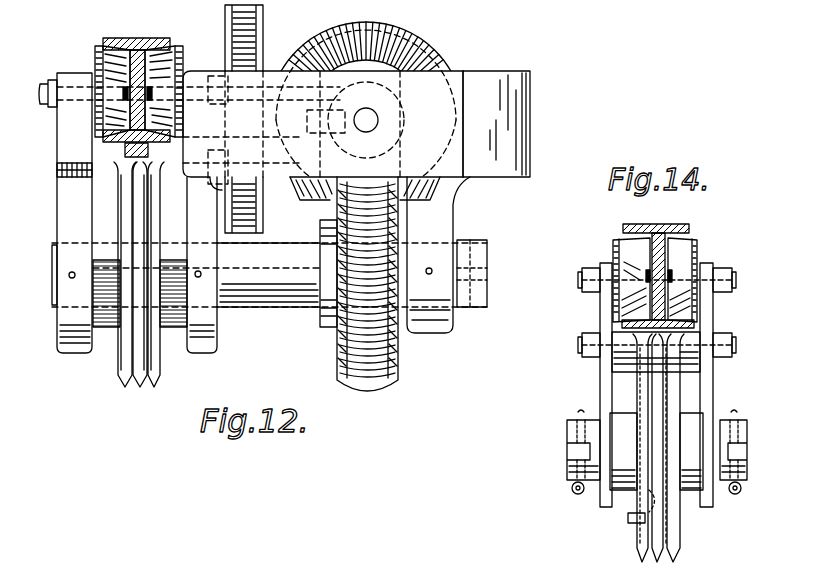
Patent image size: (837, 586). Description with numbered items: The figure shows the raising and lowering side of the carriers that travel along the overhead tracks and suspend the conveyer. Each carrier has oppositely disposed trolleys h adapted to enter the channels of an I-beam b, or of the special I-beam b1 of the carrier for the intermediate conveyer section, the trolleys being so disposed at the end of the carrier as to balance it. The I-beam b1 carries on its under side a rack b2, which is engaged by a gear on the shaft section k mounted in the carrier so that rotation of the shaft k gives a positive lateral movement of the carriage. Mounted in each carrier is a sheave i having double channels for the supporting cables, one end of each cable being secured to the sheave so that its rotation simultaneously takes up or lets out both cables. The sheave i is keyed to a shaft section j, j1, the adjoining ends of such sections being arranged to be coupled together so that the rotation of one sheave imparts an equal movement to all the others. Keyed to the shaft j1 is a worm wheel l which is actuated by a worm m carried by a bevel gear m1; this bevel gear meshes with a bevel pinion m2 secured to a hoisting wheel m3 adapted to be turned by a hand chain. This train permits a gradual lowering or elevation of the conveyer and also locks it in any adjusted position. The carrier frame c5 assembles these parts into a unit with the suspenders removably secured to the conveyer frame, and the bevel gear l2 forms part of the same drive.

In FIG. 12, the trolley h is at (92, 56).
In FIG. 14, the trolley h is at (630, 258).
In FIG. 12, the I-beam b1 is at (135, 46).
In FIG. 12, the hoisting wheel m3 is at (240, 30).
In FIG. 12, the bevel pinion m2 is at (277, 63).
In FIG. 12, the bevel gear l2 is at (355, 25).
In FIG. 12, the bevel gear m1 is at (397, 32).
In FIG. 12, the end flange c5 is at (490, 97).
In FIG. 12, the worm m is at (528, 111).
In FIG. 12, the rack b2 is at (90, 147).
In FIG. 12, the sheave i is at (118, 345).
In FIG. 14, the sheave i is at (648, 460).
In FIG. 12, the shaft section j1 is at (258, 284).
In FIG. 12, the worm wheel l is at (402, 371).
In FIG. 14, the I-beam b is at (638, 226).
In FIG. 14, the shaft section j is at (656, 451).
In FIG. 14, the shaft section k is at (580, 460).